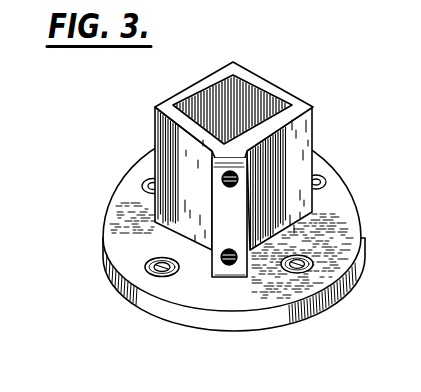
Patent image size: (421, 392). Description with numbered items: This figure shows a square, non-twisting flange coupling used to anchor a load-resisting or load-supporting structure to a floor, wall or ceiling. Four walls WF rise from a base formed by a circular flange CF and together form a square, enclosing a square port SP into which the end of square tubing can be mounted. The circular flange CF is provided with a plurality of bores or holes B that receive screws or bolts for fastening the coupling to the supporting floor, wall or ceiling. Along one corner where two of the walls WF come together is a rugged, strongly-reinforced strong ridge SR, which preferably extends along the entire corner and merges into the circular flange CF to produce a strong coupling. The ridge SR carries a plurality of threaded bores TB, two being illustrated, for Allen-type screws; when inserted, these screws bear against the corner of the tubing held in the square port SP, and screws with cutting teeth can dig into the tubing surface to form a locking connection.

The circular flange CF is at (231, 311).
The bores or holes B is at (145, 269).
The walls WF is at (157, 109).
The square port SP is at (223, 83).
The strong ridge SR is at (232, 206).
The threaded bores TB is at (224, 187).